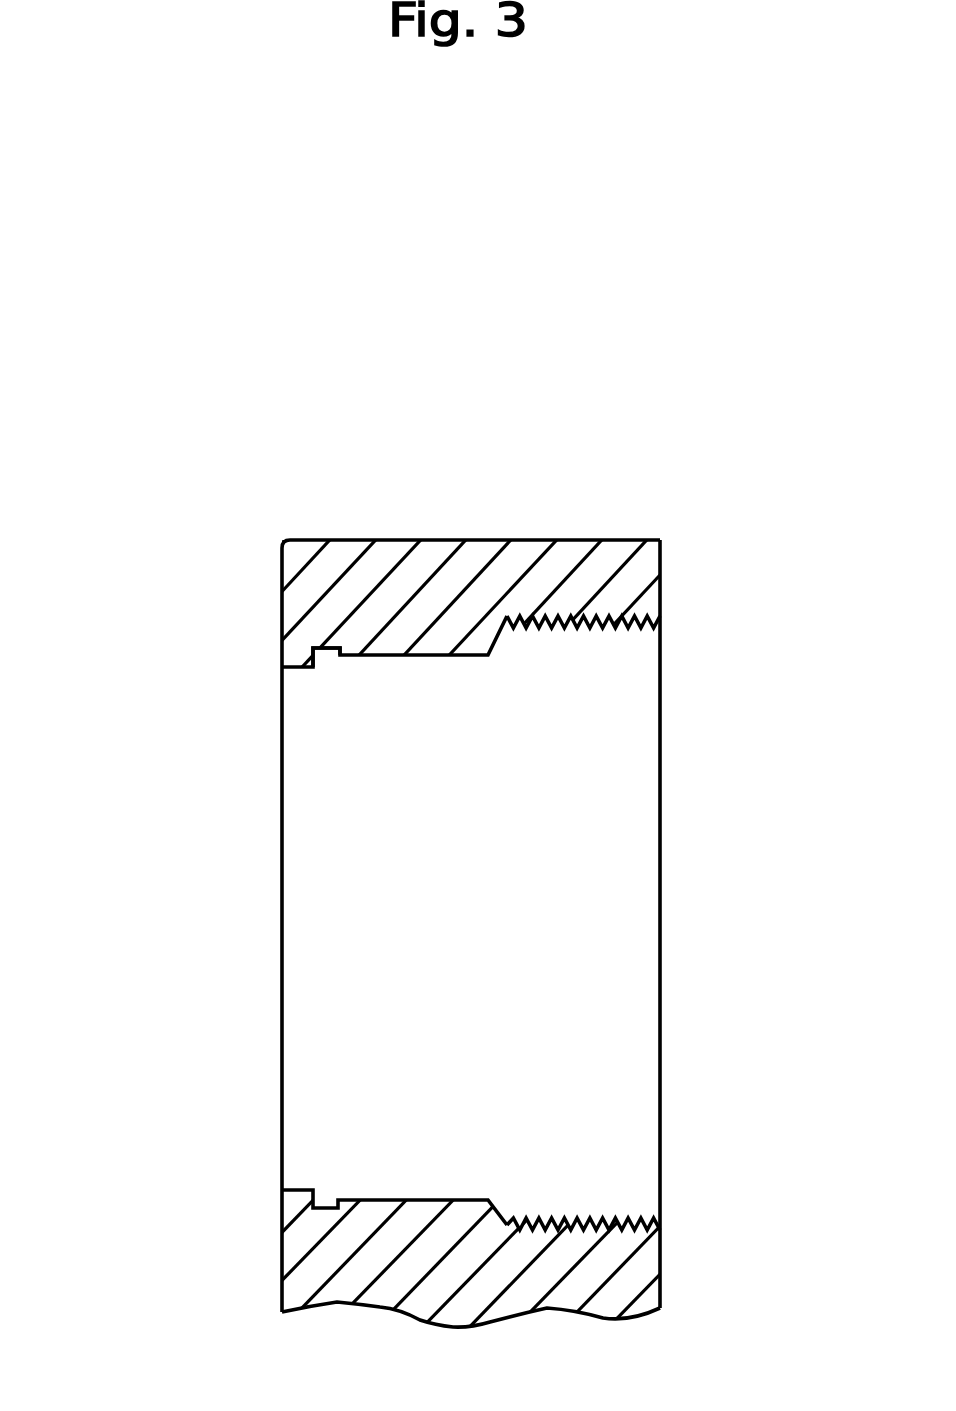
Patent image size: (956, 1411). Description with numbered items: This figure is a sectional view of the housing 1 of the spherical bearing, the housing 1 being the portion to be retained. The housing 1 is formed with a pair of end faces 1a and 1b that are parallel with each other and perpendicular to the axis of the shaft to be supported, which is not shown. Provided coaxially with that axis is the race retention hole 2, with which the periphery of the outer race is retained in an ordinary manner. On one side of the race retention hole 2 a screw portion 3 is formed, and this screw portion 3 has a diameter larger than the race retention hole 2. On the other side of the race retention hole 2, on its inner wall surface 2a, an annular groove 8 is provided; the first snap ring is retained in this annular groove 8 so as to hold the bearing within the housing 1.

The housing 1 is at (379, 541).
The end face 1a is at (660, 558).
The end face 1b is at (283, 592).
The screw portion 3 is at (592, 630).
The annular groove 8 is at (315, 662).
The race retention hole 2 is at (598, 1099).
The inner wall surface 2a is at (433, 1196).